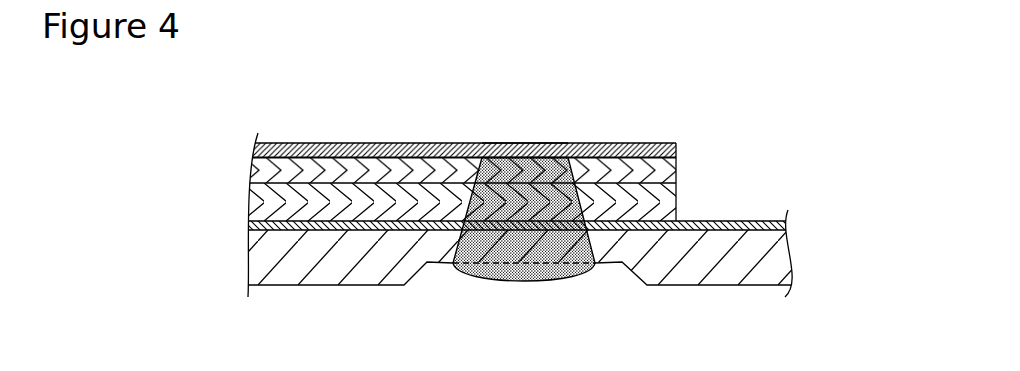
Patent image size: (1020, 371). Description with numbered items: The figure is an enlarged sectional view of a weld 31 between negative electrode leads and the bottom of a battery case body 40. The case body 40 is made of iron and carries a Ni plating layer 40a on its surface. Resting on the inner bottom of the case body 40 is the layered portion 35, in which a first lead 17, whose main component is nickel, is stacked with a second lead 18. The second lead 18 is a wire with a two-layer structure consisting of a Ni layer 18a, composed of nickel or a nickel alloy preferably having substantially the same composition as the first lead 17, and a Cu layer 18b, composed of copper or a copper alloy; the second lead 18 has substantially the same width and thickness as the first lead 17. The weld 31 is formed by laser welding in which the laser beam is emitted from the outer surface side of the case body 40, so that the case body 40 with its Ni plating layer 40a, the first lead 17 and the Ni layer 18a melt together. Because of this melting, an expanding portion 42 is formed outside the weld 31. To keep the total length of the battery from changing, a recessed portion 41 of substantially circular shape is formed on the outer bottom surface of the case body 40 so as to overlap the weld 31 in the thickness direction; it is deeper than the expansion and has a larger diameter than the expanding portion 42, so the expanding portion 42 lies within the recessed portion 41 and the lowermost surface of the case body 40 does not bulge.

The first lead 17 is at (258, 205).
The second lead 18 is at (164, 135).
The Ni layer 18a is at (256, 167).
The Cu layer 18b is at (256, 144).
The weld 31 is at (533, 144).
The layered portion 35 is at (415, 141).
The case body 40 is at (322, 274).
The Ni plating layer 40a is at (253, 226).
The recessed portion 41 is at (636, 274).
The expanding portion 42 is at (527, 284).